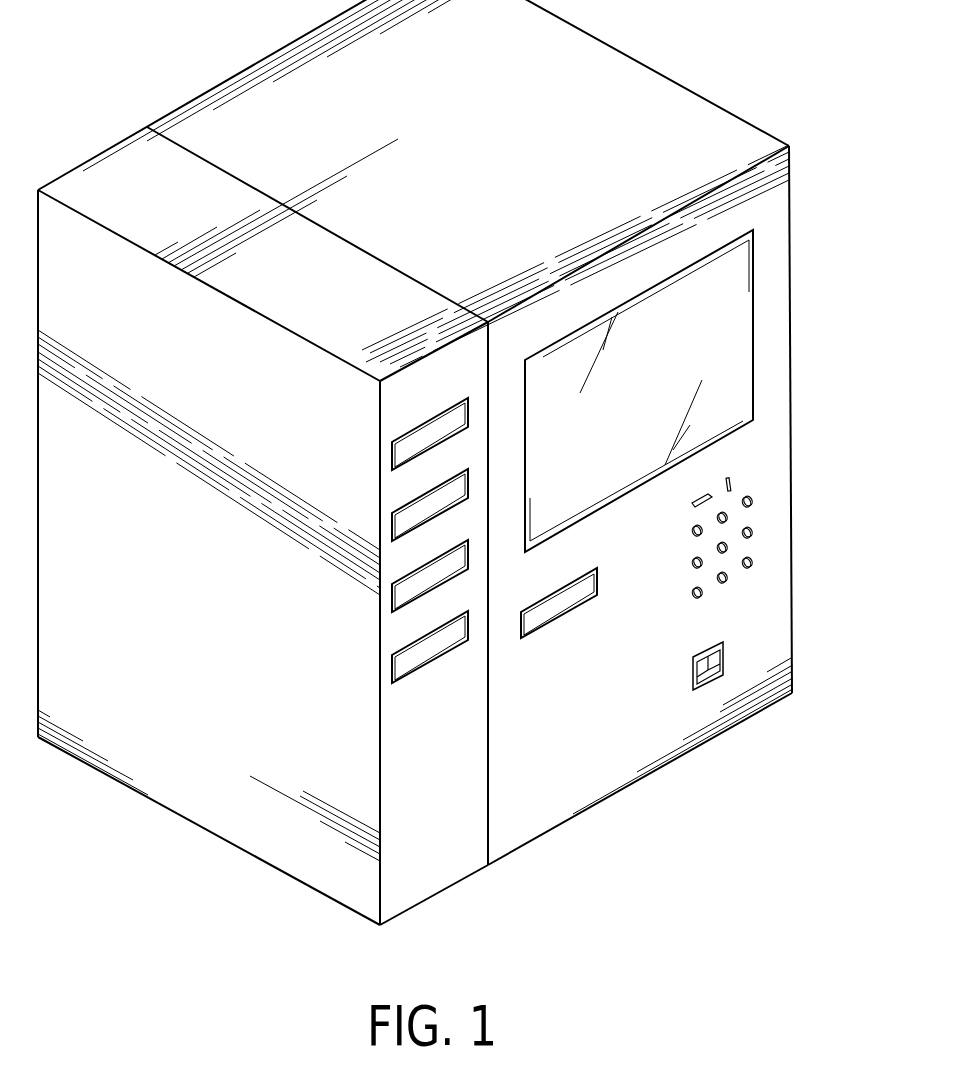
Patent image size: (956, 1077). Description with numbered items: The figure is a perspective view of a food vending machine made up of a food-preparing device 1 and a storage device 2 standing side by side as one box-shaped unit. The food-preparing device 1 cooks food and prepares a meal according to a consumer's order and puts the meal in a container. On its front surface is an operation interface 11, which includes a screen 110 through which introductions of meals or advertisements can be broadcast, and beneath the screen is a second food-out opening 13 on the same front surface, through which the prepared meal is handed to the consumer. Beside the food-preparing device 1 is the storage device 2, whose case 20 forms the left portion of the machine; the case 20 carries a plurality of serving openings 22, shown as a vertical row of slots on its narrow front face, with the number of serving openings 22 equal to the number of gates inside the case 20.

The food-preparing device 1 is at (662, 55).
The storage device 2 is at (188, 830).
The case 20 is at (323, 855).
The serving opening 22 is at (417, 672).
The screen 110 is at (735, 317).
The second food-out opening 13 is at (550, 612).
The operation interface 11 is at (661, 656).